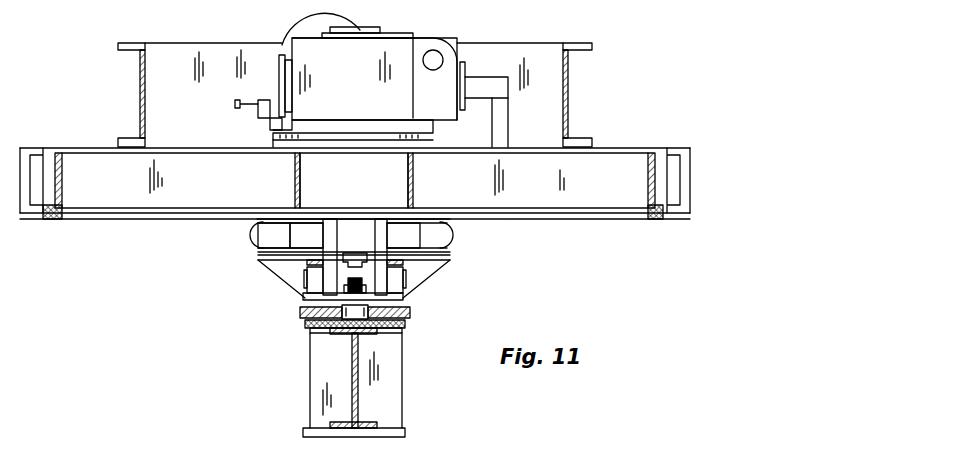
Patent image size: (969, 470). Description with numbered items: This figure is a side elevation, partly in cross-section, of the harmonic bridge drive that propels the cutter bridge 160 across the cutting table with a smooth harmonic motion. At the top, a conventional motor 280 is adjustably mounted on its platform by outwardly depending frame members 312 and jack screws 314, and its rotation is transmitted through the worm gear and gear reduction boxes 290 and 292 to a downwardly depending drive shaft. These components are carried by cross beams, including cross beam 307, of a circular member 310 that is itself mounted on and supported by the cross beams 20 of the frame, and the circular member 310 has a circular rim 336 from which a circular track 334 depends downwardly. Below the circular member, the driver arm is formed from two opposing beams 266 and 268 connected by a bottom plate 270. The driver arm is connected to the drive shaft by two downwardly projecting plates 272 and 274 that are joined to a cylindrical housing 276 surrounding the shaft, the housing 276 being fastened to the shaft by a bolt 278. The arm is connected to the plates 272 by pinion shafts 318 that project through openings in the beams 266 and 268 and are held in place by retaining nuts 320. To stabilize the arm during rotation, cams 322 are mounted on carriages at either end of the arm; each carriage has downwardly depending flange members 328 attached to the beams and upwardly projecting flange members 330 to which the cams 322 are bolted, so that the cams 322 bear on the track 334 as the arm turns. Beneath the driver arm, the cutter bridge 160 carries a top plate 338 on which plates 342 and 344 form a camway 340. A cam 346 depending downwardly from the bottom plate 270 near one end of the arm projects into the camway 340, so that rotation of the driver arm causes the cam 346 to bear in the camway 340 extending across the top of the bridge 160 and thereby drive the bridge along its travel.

The cross beams 20 is at (145, 98).
The cutter bridge 160 is at (360, 395).
The beam 266 is at (398, 280).
The beam 268 is at (308, 280).
The bottom plate 270 is at (405, 300).
The downwardly projecting plate 272 is at (380, 250).
The downwardly projecting plate 274 is at (345, 245).
The cylindrical housing 276 is at (378, 235).
The bolt 278 is at (342, 258).
The motor 280 is at (283, 55).
The worm gear and gear reduction box 290 is at (450, 48).
The worm gear and gear reduction box 292 is at (388, 45).
The cross beam 307 is at (295, 180).
The circular member 310 is at (62, 178).
The outwardly depending frame member 312 is at (262, 118).
The jack screw 314 is at (240, 104).
The pinion shaft 318 is at (403, 272).
The retaining nut 320 is at (410, 268).
The cam 322 is at (252, 236).
The downwardly depending flange member 328 is at (270, 268).
The upwardly projecting flange member 330 is at (270, 240).
The circular track 334 is at (52, 219).
The circular rim 336 is at (648, 178).
The top plate 338 is at (310, 335).
The camway 340 is at (370, 334).
The plate 342 is at (300, 312).
The plate 344 is at (305, 328).
The cam 346 is at (350, 333).